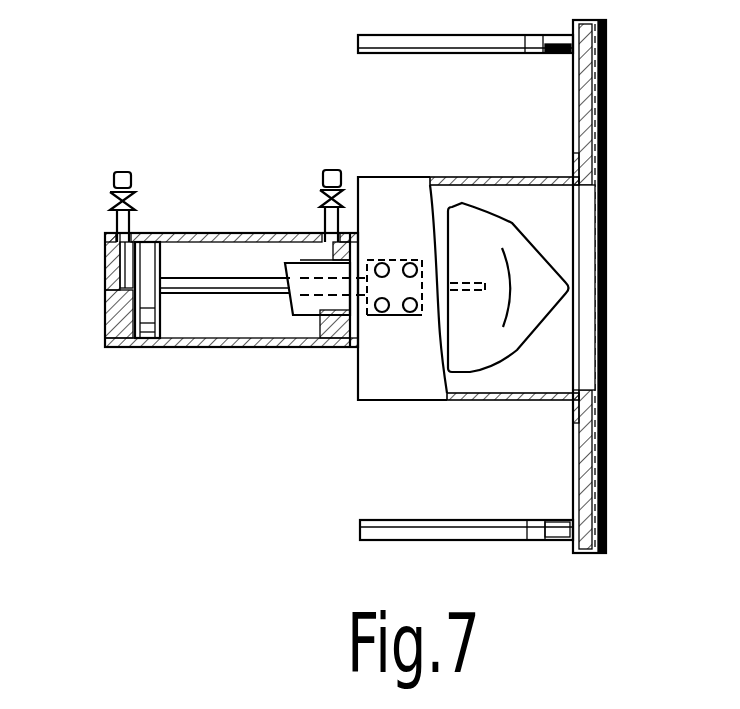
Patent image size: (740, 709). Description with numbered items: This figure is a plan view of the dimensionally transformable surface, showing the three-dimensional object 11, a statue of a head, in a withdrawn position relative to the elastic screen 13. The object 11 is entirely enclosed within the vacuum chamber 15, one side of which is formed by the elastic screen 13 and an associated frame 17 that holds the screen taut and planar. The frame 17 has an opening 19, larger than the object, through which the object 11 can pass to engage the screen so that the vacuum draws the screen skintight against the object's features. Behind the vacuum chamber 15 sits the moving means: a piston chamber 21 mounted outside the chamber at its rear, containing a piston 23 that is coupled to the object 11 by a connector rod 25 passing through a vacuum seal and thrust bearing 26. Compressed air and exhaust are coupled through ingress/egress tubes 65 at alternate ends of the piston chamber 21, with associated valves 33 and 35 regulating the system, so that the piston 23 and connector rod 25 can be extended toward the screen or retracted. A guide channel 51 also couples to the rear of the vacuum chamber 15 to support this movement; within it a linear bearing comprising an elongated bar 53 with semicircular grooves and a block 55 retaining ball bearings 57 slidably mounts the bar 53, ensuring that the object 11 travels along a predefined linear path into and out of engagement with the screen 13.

The three-dimensional object 11 is at (518, 223).
The elastic screen 13 is at (601, 240).
The vacuum chamber 15 is at (373, 174).
The frame 17 is at (590, 132).
The opening 19 is at (583, 303).
The piston chamber 21 is at (118, 343).
The piston 23 is at (150, 247).
The connector rod 25 is at (165, 292).
The vacuum seal and thrust bearing 26 is at (350, 258).
The valve 33 is at (110, 200).
The valve 35 is at (325, 166).
The guide channel 51 is at (303, 262).
The elongated bar 53 is at (323, 288).
The block 55 is at (396, 320).
The ball bearings 57 is at (418, 300).
The ingress/egress tubes 65 is at (117, 282).